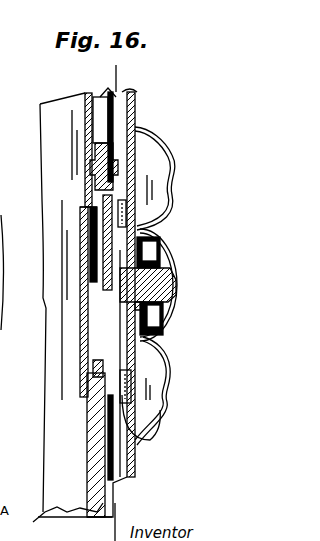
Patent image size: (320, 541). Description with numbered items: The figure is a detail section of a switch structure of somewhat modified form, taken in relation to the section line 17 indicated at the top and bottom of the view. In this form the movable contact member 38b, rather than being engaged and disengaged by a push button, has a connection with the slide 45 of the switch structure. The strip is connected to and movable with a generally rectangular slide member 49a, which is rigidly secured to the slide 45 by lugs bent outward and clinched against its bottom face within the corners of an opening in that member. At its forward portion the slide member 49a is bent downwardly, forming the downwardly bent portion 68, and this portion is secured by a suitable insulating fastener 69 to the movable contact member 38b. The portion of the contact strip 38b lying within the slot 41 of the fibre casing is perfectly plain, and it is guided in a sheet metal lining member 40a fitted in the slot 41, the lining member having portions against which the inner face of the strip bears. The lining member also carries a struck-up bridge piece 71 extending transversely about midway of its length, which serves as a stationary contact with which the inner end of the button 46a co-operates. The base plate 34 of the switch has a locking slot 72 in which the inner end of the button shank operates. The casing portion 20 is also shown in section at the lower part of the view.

The section line 17 is at (106, 74).
The movable contact member 38b is at (88, 130).
The sheet metal lining member 40a is at (80, 318).
The bridge piece 71 is at (110, 268).
The insulating fastener 69 is at (115, 167).
The downwardly bent portion 68 is at (118, 192).
The button 46a is at (177, 291).
The slide member 49a is at (163, 241).
The locking slot 72 is at (153, 313).
The slide 45 is at (168, 372).
The slot 41 is at (132, 387).
The base plate 34 is at (127, 481).
The base block 20 is at (97, 475).